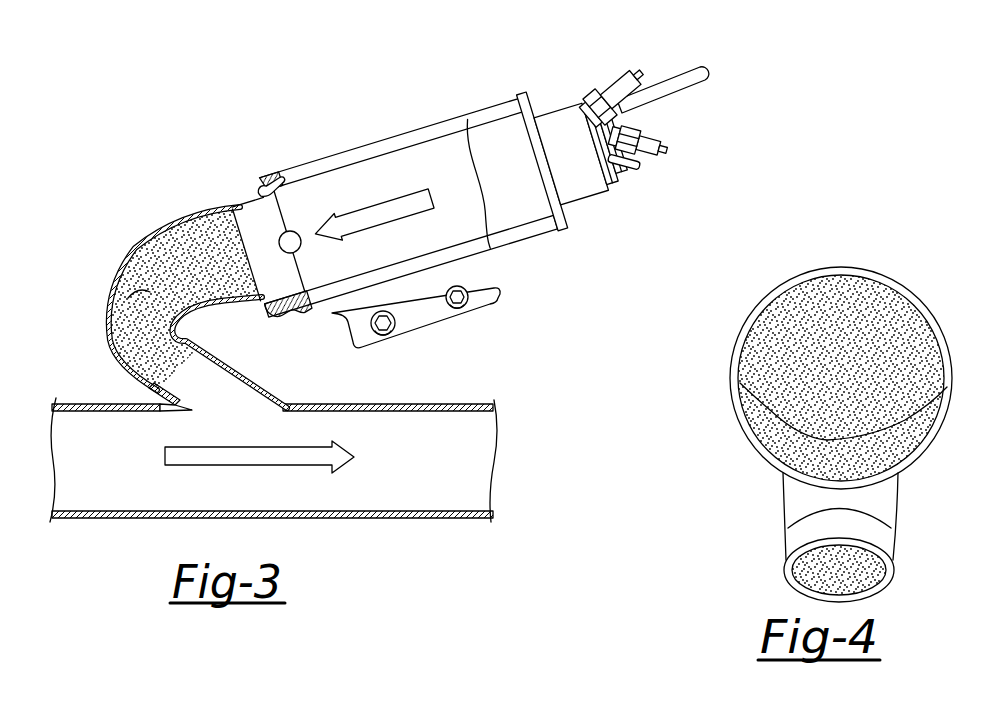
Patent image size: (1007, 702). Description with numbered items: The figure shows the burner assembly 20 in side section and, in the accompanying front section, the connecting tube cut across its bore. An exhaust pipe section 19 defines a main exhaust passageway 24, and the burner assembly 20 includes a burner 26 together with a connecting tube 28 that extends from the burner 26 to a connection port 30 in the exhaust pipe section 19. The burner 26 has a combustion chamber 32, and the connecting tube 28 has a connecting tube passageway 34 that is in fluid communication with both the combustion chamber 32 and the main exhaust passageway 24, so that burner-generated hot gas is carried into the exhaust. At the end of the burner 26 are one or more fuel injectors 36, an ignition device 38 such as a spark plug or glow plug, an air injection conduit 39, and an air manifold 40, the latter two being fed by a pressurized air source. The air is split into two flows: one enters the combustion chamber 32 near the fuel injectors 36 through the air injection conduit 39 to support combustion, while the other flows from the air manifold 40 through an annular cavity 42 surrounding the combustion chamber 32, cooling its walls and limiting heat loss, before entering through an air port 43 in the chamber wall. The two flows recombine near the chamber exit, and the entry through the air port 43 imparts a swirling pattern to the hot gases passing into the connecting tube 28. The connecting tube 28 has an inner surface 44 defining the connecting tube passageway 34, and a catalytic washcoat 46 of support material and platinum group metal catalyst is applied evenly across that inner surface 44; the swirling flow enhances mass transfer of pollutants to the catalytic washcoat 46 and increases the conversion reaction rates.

In FIG. 3, the exhaust pipe section 19 is at (440, 402).
In FIG. 3, the burner assembly 20 is at (376, 205).
In FIG. 3, the main exhaust passageway 24 is at (421, 489).
In FIG. 3, the burner 26 is at (480, 135).
In FIG. 3, the connecting tube 28 is at (178, 298).
In FIG. 4, the connecting tube 28 is at (801, 434).
In FIG. 3, the connection port 30 is at (210, 397).
In FIG. 3, the combustion chamber 32 is at (432, 207).
In FIG. 3, the connecting tube passageway 34 is at (196, 292).
In FIG. 4, the connecting tube passageway 34 is at (846, 357).
In FIG. 3, the fuel injectors 36 is at (620, 76).
In FIG. 3, the ignition device 38 is at (634, 137).
In FIG. 3, the air injection conduit 39 is at (622, 178).
In FIG. 3, the air manifold 40 is at (663, 88).
In FIG. 3, the annular cavity 42 is at (272, 178).
In FIG. 3, the air port 43 is at (302, 244).
In FIG. 3, the inner surface 44 is at (152, 310).
In FIG. 4, the inner surface 44 is at (808, 450).
In FIG. 3, the catalytic washcoat 46 is at (140, 352).
In FIG. 4, the catalytic washcoat 46 is at (770, 350).